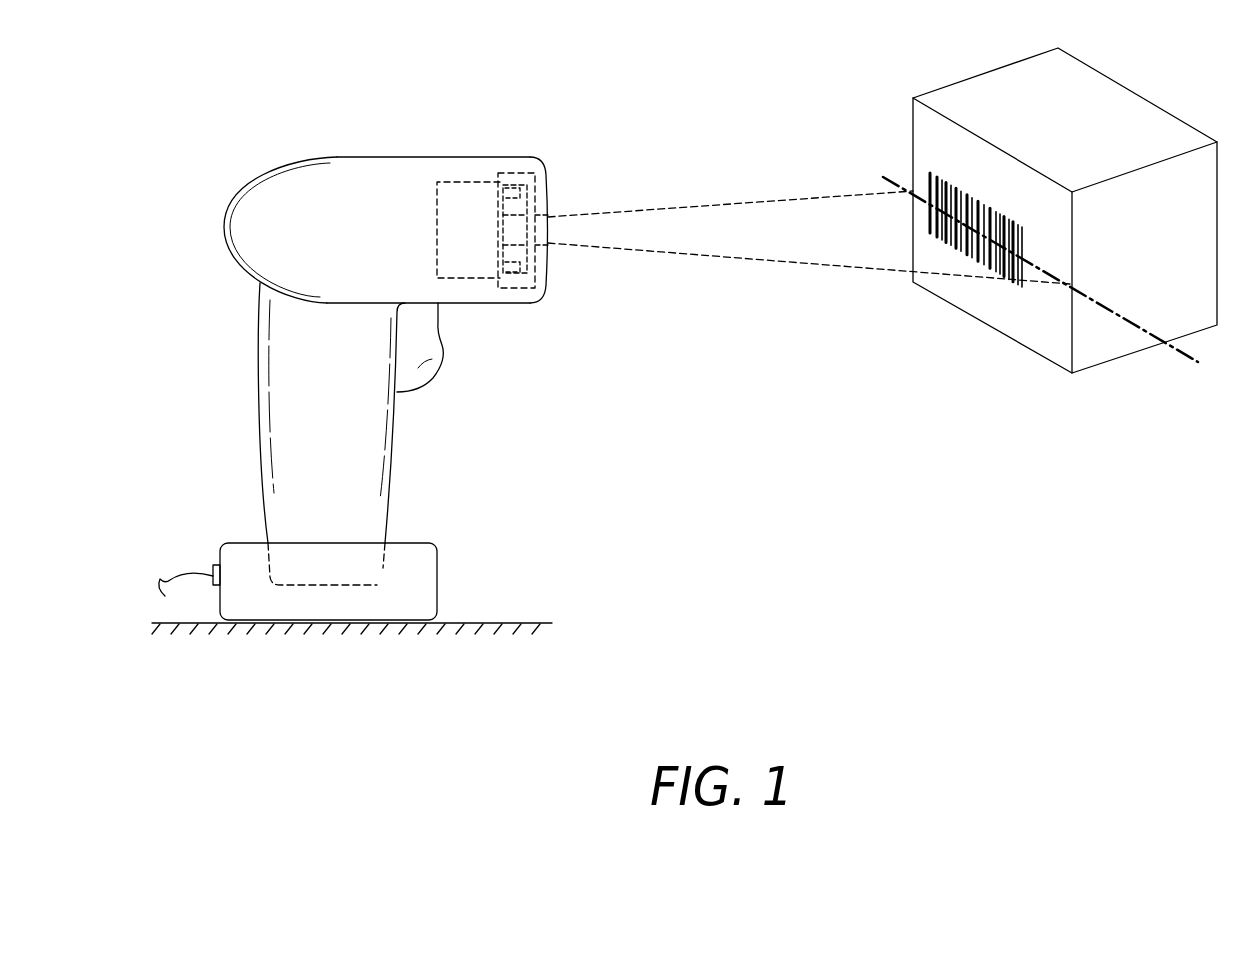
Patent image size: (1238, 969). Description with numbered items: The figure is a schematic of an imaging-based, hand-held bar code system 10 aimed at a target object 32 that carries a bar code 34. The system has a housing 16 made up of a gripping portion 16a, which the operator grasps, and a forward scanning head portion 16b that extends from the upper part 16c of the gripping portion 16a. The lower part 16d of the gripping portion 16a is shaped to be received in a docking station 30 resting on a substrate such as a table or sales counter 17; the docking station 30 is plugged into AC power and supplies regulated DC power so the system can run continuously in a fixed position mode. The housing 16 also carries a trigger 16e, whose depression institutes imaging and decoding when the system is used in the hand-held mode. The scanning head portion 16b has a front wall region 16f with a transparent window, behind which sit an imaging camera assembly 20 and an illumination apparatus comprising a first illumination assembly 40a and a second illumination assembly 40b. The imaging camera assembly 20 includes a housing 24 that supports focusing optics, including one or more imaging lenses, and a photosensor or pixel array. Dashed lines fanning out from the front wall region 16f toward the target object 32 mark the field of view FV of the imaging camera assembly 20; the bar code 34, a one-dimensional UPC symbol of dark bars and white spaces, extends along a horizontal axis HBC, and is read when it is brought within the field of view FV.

The imaging-based bar code system 10 is at (362, 338).
The housing 16 is at (224, 318).
The gripping portion 16a is at (260, 473).
The scanning head portion 16b is at (388, 157).
The upper part of the gripping portion 16c is at (350, 317).
The lower part of the gripping portion 16d is at (375, 563).
The trigger 16e is at (425, 357).
The front wall region 16f is at (538, 153).
The sales counter 17 is at (527, 623).
The imaging camera assembly 20 is at (437, 198).
The housing of the imaging camera assembly 24 is at (517, 233).
The docking station 30 is at (415, 543).
The target object 32 is at (1043, 364).
The bar code 34 is at (970, 270).
The first illumination assembly 40a is at (508, 265).
The second illumination assembly 40b is at (508, 192).
The field of view FV is at (740, 206).
The horizontal axis HBC is at (1173, 350).